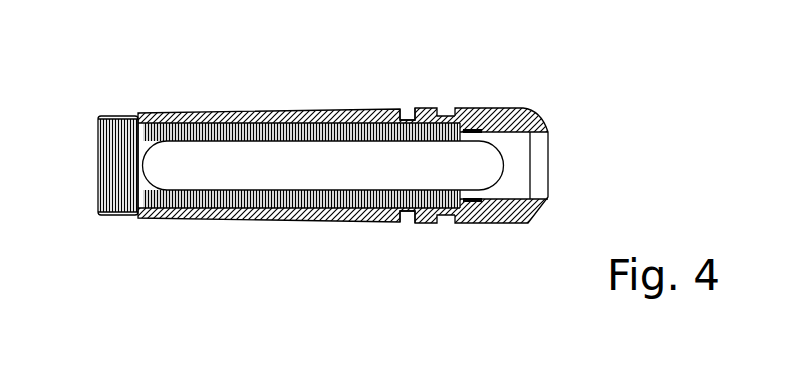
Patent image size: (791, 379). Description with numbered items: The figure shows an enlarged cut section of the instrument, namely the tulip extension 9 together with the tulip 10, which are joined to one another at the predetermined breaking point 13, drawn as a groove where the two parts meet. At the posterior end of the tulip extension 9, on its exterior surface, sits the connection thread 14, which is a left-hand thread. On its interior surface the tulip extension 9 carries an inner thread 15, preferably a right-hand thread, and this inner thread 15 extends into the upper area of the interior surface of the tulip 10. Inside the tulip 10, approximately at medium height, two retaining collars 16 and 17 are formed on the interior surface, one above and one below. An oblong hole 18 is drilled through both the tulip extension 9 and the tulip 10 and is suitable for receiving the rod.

The tulip extension 9 is at (222, 113).
The tulip 10 is at (495, 108).
The predetermined breaking point 13 is at (412, 118).
The connection thread 14 is at (110, 113).
The inner thread 15 is at (115, 185).
The retaining collar 16 is at (470, 130).
The retaining collar 17 is at (480, 203).
The oblong hole 18 is at (265, 161).